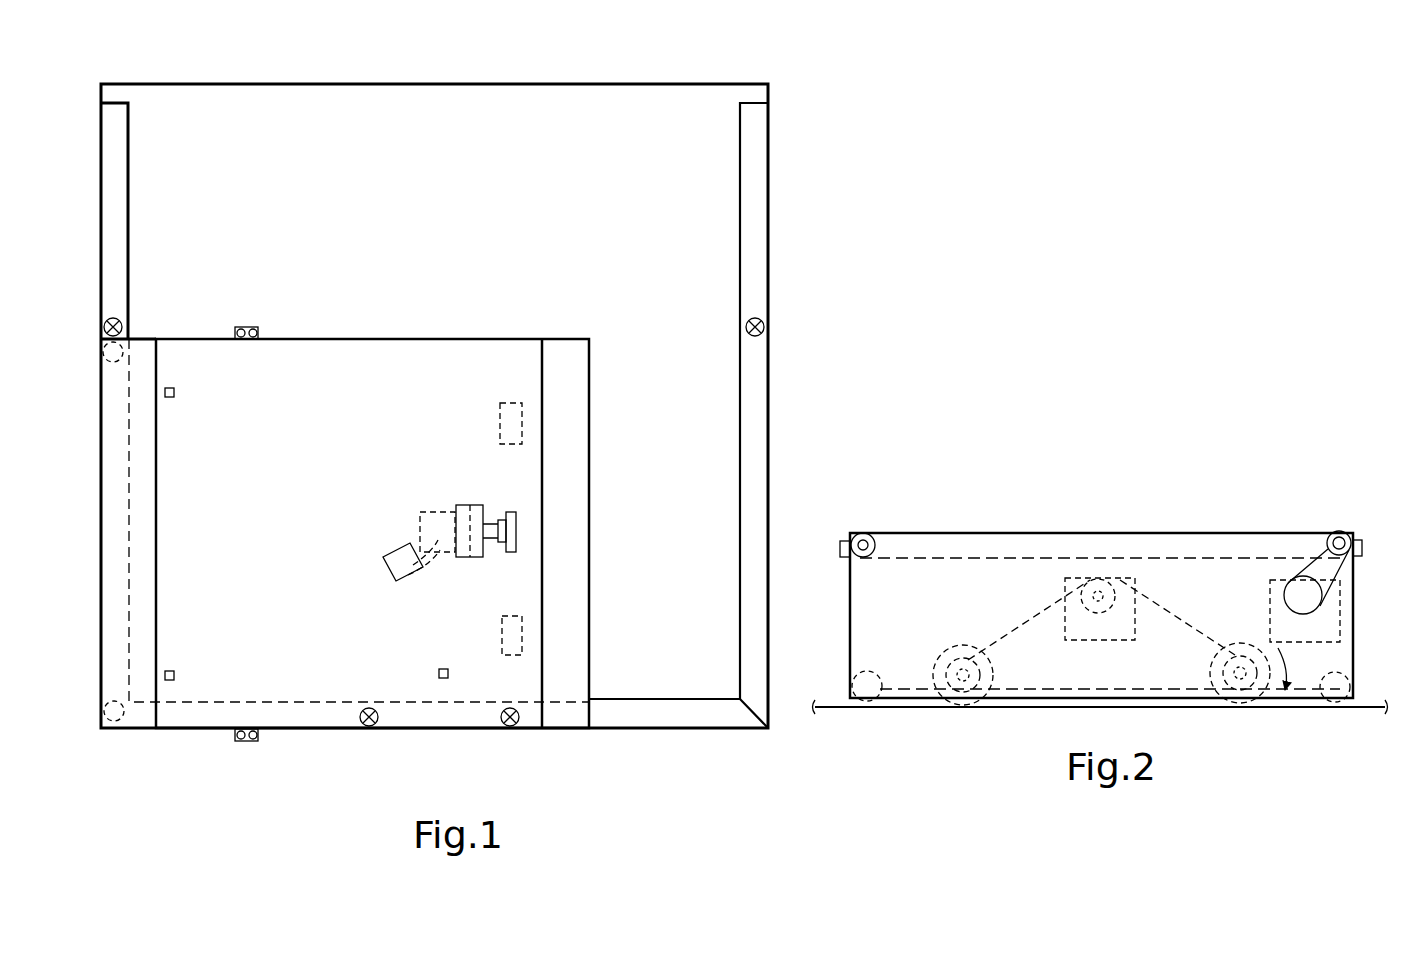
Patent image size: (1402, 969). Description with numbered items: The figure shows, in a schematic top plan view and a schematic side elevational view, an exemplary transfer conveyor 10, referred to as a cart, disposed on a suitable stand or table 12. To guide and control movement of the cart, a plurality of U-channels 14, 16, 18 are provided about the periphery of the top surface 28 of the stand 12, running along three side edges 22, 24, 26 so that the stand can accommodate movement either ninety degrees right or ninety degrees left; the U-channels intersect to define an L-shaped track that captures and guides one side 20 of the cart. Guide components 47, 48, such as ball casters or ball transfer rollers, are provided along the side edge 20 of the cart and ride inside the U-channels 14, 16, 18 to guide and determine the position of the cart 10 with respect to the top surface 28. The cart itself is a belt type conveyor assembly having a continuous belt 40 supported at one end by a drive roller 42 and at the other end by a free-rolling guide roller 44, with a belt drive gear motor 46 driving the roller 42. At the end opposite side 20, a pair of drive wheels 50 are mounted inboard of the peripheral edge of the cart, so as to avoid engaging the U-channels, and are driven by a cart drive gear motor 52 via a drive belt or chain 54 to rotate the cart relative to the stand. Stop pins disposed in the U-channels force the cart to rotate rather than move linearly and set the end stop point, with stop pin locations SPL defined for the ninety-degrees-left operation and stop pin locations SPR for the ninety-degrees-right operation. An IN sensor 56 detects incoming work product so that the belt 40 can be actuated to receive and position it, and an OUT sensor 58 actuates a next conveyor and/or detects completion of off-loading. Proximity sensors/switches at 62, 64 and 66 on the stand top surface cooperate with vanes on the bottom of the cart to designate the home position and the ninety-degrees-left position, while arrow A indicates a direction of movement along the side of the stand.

In FIG. 1, the transfer conveyor 10 is at (575, 322).
In FIG. 1, the stand 12 is at (772, 72).
In FIG. 1, the U-channel 14 is at (118, 171).
In FIG. 1, the U-channel 16 is at (642, 718).
In FIG. 1, the U-channel 18 is at (752, 258).
In FIG. 1, the side of the cart 20 is at (101, 572).
In FIG. 1, the side edge 22 is at (95, 257).
In FIG. 1, the side edge 24 is at (324, 732).
In FIG. 1, the side edge 26 is at (772, 477).
In FIG. 1, the top surface 28 is at (451, 170).
In FIG. 1, the continuous belt 40 is at (291, 496).
In FIG. 2, the continuous belt 40 is at (1075, 533).
In FIG. 2, the drive roller 42 is at (1345, 530).
In FIG. 2, the free-rolling guide roller 44 is at (858, 533).
In FIG. 2, the belt drive gear motor 46 is at (1325, 605).
In FIG. 1, the guide component 47 is at (103, 354).
In FIG. 2, the guide component 47 is at (1340, 703).
In FIG. 1, the guide component 48 is at (124, 720).
In FIG. 2, the guide component 48 is at (860, 705).
In FIG. 1, the drive wheels 50 is at (508, 424).
In FIG. 2, the drive wheels 50 is at (985, 675).
In FIG. 1, the cart drive gear motor 52 is at (459, 560).
In FIG. 2, the cart drive gear motor 52 is at (1133, 640).
In FIG. 2, the drive belt or chain 54 is at (1020, 617).
In FIG. 1, the IN sensor 56 is at (240, 742).
In FIG. 1, the OUT sensor 58 is at (247, 327).
In FIG. 1, the proximity sensor/switch 62 is at (174, 392).
In FIG. 1, the proximity sensor/switch 64 is at (195, 678).
In FIG. 1, the proximity sensor/switch 66 is at (442, 668).
In FIG. 1, the direction arrow A is at (73, 520).
In FIG. 1, the stop pin locations SPL is at (125, 327).
In FIG. 1, the stop pin locations SPR is at (746, 328).